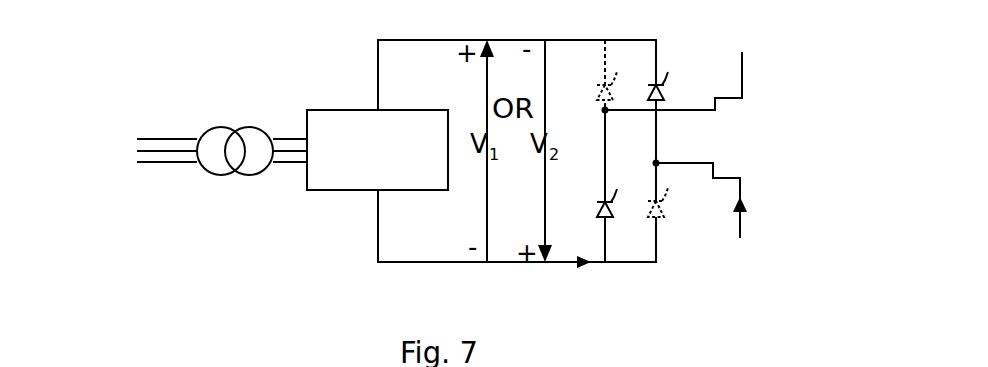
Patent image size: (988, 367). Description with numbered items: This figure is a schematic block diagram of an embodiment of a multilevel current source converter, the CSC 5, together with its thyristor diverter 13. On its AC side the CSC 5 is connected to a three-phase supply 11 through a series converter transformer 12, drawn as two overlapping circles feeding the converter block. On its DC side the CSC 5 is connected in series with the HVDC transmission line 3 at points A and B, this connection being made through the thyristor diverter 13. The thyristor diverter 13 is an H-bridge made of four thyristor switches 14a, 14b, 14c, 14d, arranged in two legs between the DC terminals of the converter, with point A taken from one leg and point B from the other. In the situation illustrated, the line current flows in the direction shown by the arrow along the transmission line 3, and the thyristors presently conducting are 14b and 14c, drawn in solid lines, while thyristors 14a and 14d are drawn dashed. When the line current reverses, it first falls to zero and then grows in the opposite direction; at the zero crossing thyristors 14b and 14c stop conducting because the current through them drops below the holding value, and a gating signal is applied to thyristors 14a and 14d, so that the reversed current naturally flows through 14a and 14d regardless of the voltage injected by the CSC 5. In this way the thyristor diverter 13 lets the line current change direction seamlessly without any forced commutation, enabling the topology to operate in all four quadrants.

The three-phase supply 11 is at (105, 63).
The series converter transformer 12 is at (220, 138).
The CSC 5 is at (310, 122).
The thyristor switch 14a is at (586, 72).
The thyristor switch 14b is at (640, 72).
The thyristor switch 14c is at (586, 188).
The thyristor switch 14d is at (638, 188).
The thyristor diverter 13 is at (593, 274).
The transmission line 3 is at (742, 70).